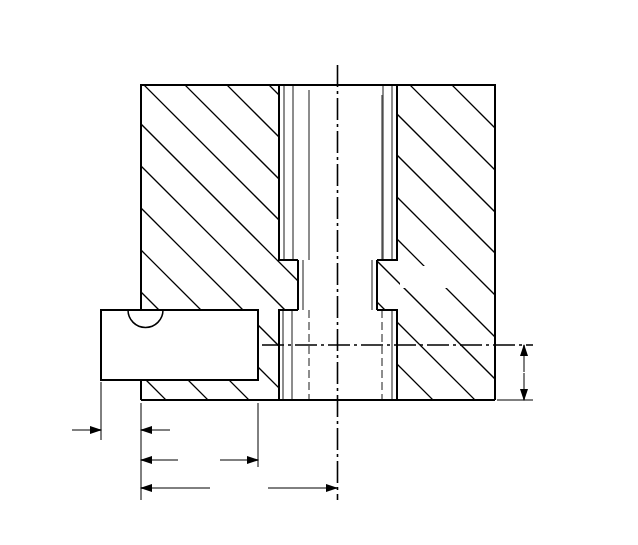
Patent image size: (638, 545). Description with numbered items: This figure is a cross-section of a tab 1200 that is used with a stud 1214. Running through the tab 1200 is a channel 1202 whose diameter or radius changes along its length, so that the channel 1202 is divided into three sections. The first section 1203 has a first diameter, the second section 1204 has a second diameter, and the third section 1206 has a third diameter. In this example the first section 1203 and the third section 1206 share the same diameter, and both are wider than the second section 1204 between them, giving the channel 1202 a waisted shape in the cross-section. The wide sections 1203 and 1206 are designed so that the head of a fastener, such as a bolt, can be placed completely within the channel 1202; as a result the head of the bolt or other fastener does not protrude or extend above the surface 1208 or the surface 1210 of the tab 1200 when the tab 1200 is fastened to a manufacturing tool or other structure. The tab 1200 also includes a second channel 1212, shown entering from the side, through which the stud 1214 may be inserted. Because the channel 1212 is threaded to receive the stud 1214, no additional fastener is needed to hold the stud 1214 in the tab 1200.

The tab 1200 is at (495, 191).
The channel 1202 is at (446, 65).
The section 1203 is at (360, 85).
The section 1204 is at (378, 285).
The section 1206 is at (365, 401).
The surface 1208 is at (205, 85).
The surface 1210 is at (447, 401).
The channel 1212 is at (128, 310).
The stud 1214 is at (105, 338).